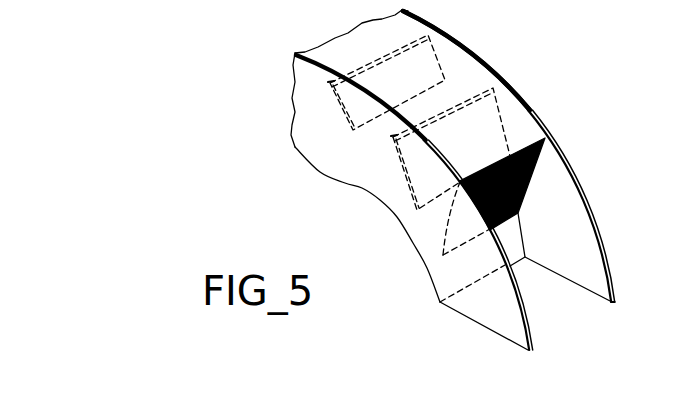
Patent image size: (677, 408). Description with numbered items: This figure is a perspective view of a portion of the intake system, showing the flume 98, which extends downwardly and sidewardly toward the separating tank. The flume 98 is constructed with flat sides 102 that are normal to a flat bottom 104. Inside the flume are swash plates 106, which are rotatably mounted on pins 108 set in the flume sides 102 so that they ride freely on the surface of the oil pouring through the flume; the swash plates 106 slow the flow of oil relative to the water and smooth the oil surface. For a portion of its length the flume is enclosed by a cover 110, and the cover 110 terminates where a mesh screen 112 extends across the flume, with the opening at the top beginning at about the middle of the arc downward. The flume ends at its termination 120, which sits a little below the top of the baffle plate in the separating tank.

The flume 98 is at (321, 174).
The flat sides 102 is at (420, 220).
The flat bottom 104 is at (508, 238).
The swash plates 106 is at (428, 50).
The pins 108 is at (476, 95).
The cover 110 is at (530, 127).
The mesh screen 112 is at (533, 172).
The termination 120 is at (535, 280).